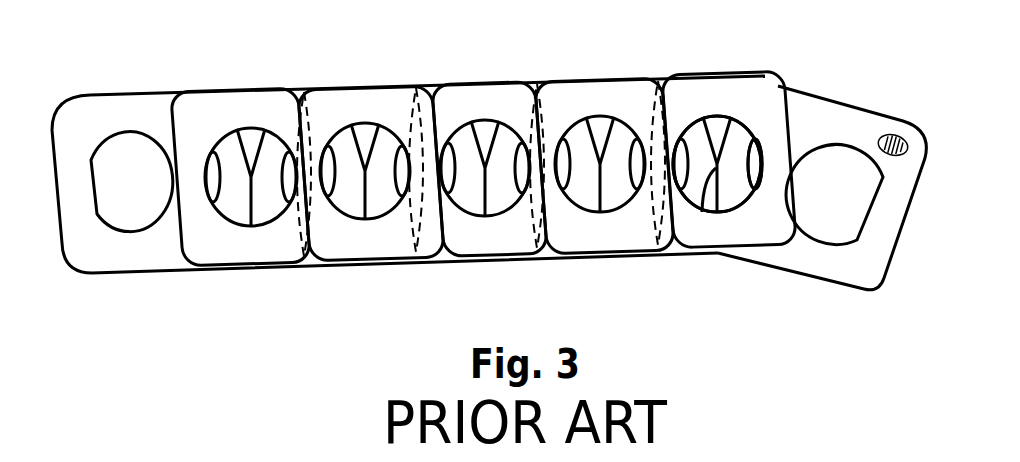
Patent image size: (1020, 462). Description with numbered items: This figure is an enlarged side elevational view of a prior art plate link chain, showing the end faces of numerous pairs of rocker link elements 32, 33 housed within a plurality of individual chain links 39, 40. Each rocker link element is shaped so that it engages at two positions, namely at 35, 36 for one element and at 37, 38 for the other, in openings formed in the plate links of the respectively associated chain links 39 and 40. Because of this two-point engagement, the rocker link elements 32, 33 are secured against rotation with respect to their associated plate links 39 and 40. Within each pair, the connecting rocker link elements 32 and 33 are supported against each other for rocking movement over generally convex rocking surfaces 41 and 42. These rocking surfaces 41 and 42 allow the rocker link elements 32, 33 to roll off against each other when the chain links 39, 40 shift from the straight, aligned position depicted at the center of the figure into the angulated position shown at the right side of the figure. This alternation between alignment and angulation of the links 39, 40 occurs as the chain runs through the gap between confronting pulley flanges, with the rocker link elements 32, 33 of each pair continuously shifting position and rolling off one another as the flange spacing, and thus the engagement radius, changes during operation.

The rocker link element 32 is at (708, 128).
The rocker link element 33 is at (742, 140).
The engagement position 35 is at (687, 140).
The engagement position 36 is at (680, 170).
The engagement position 37 is at (762, 120).
The engagement position 38 is at (763, 210).
The chain link 39 is at (432, 260).
The chain link 40 is at (253, 110).
The rocking surface 41 is at (715, 145).
The rocking surface 42 is at (702, 170).